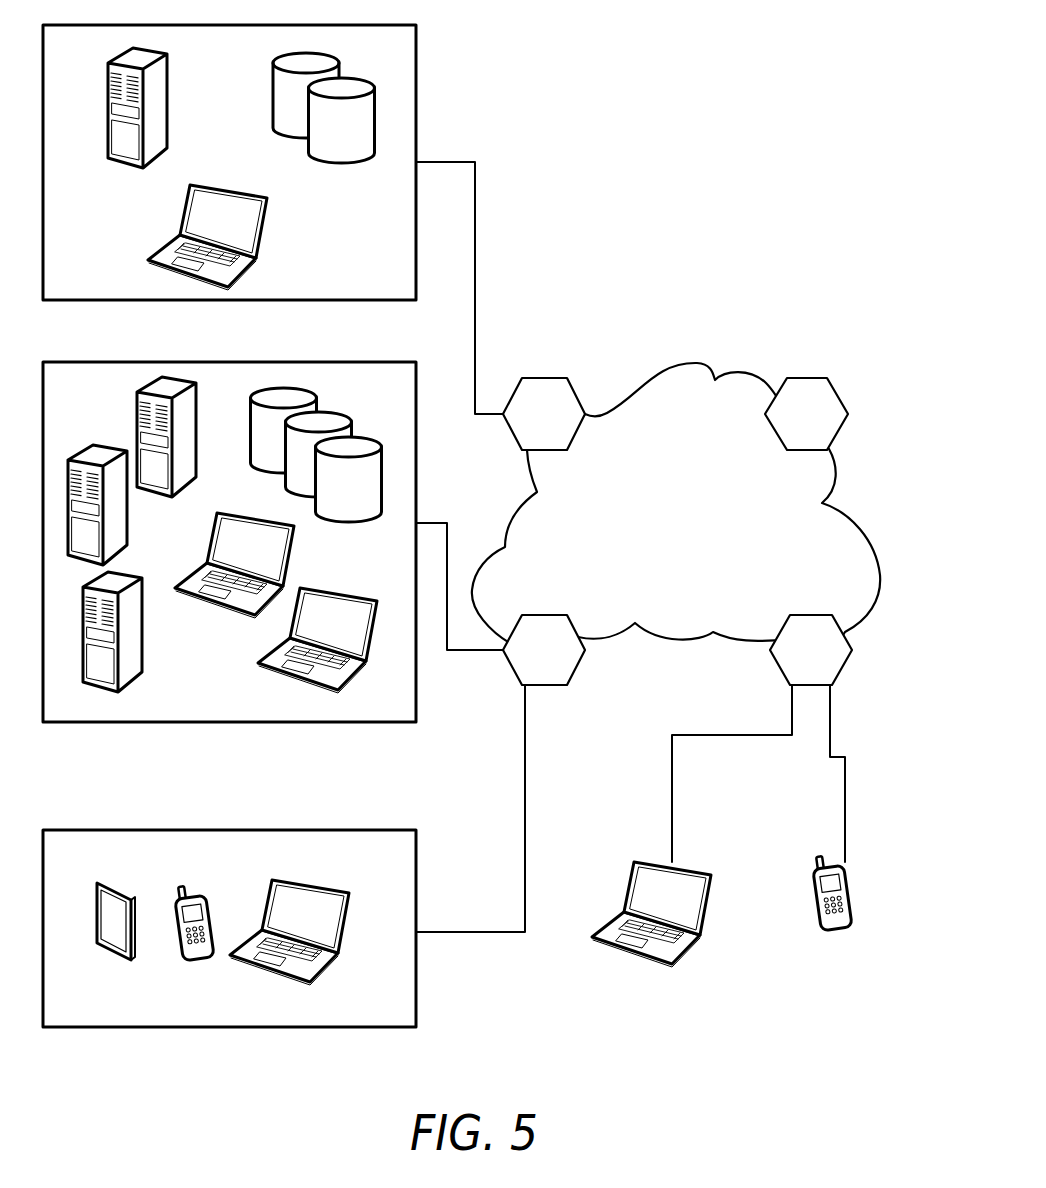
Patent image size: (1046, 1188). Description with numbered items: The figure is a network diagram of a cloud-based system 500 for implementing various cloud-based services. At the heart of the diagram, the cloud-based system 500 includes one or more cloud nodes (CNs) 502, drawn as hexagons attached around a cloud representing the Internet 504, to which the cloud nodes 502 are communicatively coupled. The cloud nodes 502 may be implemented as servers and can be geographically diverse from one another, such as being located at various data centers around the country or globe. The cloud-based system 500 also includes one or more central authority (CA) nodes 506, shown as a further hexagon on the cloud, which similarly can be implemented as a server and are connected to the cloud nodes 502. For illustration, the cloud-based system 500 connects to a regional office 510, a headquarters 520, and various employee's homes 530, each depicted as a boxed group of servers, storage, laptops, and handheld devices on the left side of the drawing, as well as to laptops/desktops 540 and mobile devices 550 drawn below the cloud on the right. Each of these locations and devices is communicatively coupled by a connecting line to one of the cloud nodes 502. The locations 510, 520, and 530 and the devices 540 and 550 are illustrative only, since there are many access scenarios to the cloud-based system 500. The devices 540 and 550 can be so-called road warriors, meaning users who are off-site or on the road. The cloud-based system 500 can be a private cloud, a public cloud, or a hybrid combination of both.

The cloud-based system 500 is at (461, 526).
The cloud node 502 is at (538, 378).
The Internet 504 is at (697, 363).
The central authority node 506 is at (810, 378).
The regional office 510 is at (417, 73).
The headquarters 520 is at (417, 437).
The employee's homes 530 is at (417, 970).
The laptops/desktops 540 is at (692, 870).
The mobile devices 550 is at (817, 913).